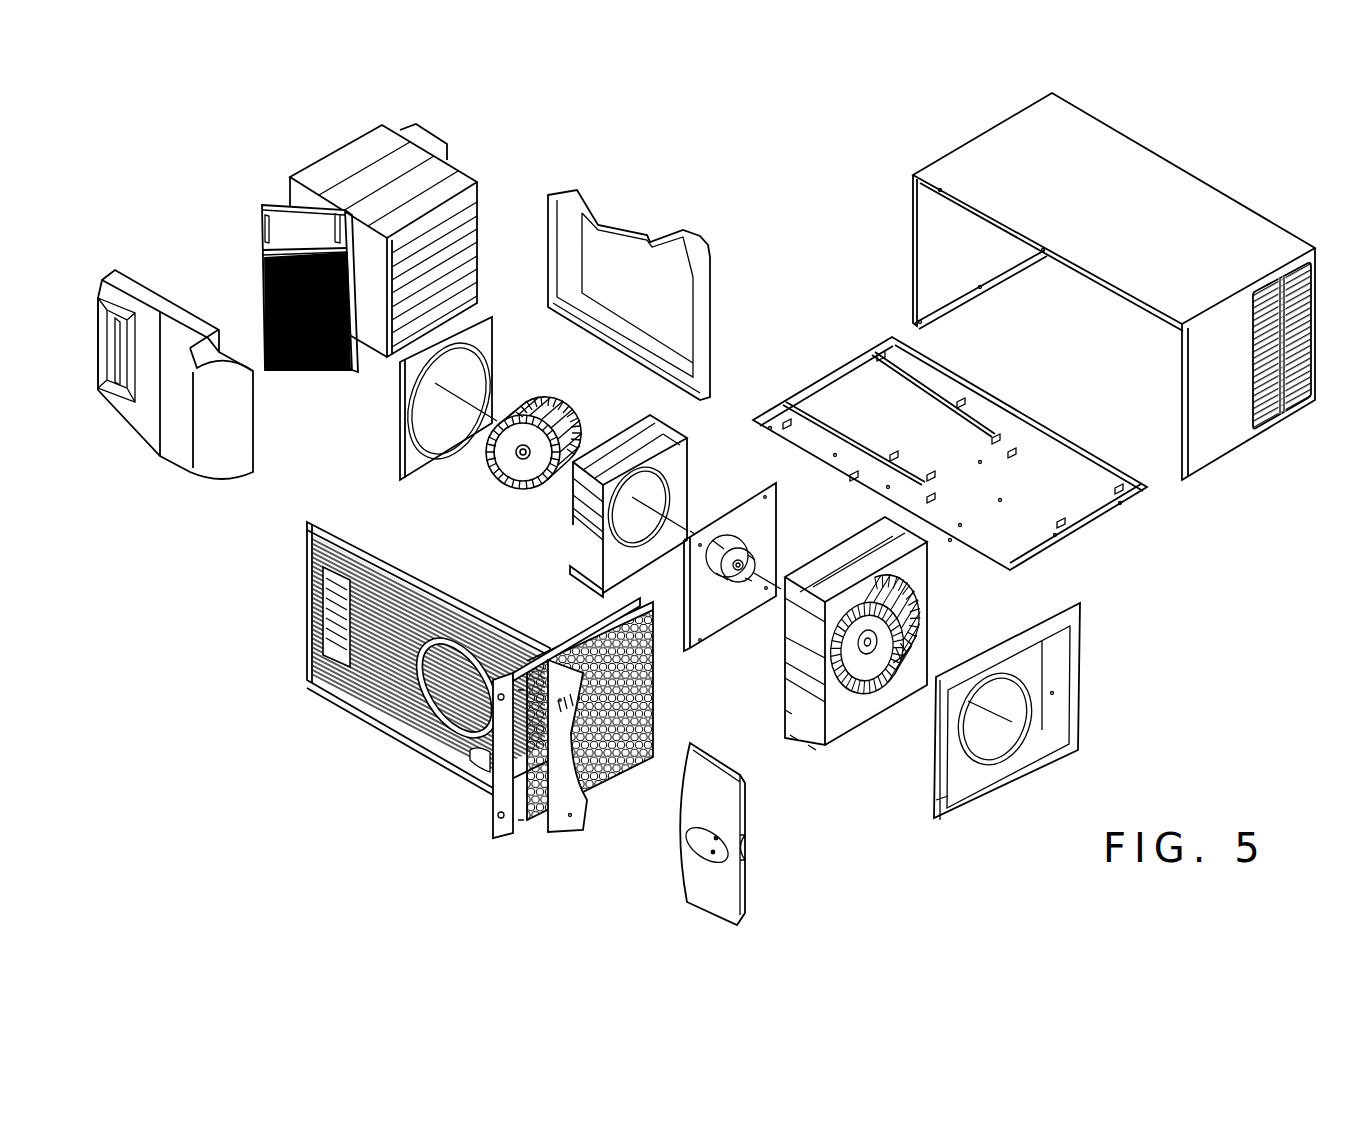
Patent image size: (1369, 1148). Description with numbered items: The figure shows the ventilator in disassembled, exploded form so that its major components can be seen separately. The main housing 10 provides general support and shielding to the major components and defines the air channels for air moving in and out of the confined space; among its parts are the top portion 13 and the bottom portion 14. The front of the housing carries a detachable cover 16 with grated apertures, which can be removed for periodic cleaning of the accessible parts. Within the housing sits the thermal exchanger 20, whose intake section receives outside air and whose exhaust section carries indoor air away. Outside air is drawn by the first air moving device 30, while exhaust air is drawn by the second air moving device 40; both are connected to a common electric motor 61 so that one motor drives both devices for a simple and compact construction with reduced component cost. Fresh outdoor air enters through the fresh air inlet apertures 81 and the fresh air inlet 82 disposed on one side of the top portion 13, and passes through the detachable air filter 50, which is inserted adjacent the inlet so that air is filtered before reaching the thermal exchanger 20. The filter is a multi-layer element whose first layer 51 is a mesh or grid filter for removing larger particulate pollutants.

The main housing 10 is at (898, 118).
The top portion 13 is at (1186, 181).
The bottom portion 14 is at (1053, 447).
The detachable cover 16 is at (389, 658).
The thermal exchanger 20 is at (241, 217).
The first air moving device 30 is at (926, 592).
The second air moving device 40 is at (494, 488).
The air filter 50 is at (502, 828).
The first layer 51 is at (625, 763).
The common electric motor 61 is at (772, 521).
The fresh air inlet apertures 81 is at (1266, 452).
The fresh air inlet 82 is at (290, 656).